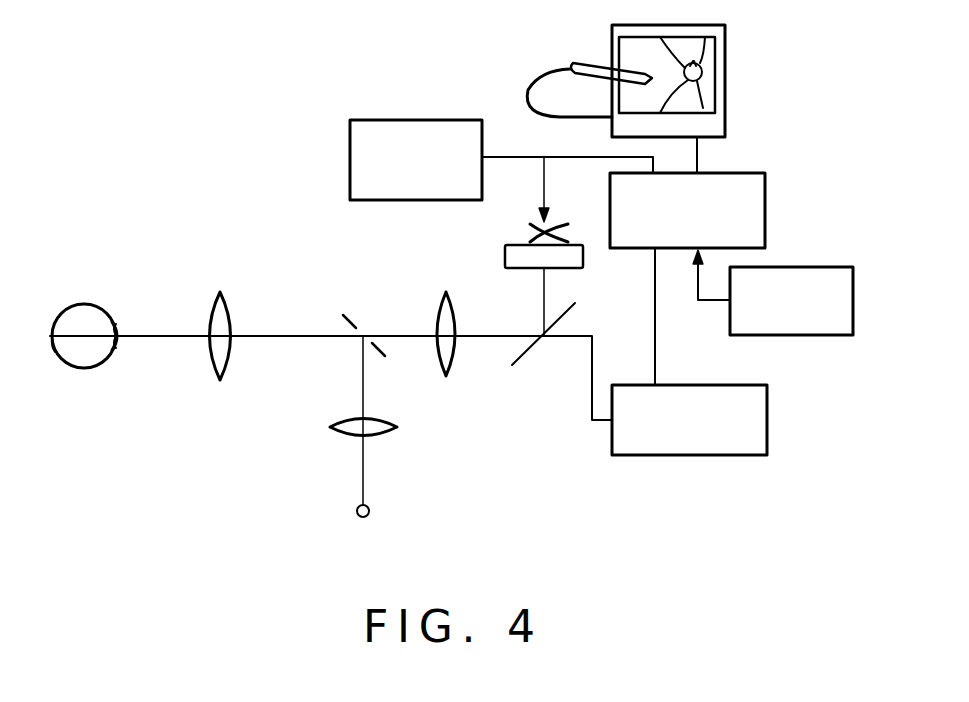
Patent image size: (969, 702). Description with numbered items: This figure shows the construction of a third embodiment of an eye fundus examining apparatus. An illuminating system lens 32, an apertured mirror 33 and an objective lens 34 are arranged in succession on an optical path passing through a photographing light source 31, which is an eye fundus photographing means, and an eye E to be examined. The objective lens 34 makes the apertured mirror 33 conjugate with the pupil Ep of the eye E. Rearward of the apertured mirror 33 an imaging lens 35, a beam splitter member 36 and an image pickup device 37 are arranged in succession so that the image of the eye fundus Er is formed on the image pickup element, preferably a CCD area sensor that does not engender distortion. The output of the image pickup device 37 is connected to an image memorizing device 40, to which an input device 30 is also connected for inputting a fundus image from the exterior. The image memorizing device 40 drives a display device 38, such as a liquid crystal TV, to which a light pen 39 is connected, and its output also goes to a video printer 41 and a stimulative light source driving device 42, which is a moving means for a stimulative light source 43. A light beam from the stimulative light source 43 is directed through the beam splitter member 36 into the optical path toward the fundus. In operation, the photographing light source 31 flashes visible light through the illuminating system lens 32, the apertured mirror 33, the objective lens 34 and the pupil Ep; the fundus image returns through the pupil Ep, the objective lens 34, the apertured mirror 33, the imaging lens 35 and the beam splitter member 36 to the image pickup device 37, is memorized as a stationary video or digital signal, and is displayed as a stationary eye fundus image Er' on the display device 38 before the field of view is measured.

The eye to be examined E is at (77, 307).
The pupil Ep is at (113, 325).
The eye fundus Er is at (59, 378).
The stationary eye fundus image Er' is at (730, 70).
The input device 30 is at (822, 335).
The photographing light source 31 is at (369, 511).
The illuminating system lens 32 is at (396, 430).
The apertured mirror 33 is at (348, 312).
The objective lens 34 is at (221, 292).
The imaging lens 35 is at (448, 376).
The beam splitter member 36 is at (527, 355).
The image pickup device 37 is at (705, 455).
The display device 38 is at (725, 96).
The light pen 39 is at (583, 62).
The image memorizing device 40 is at (765, 212).
The video printer 41 is at (350, 155).
The stimulative light source driving device 42 is at (505, 255).
The stimulative light source 43 is at (519, 268).